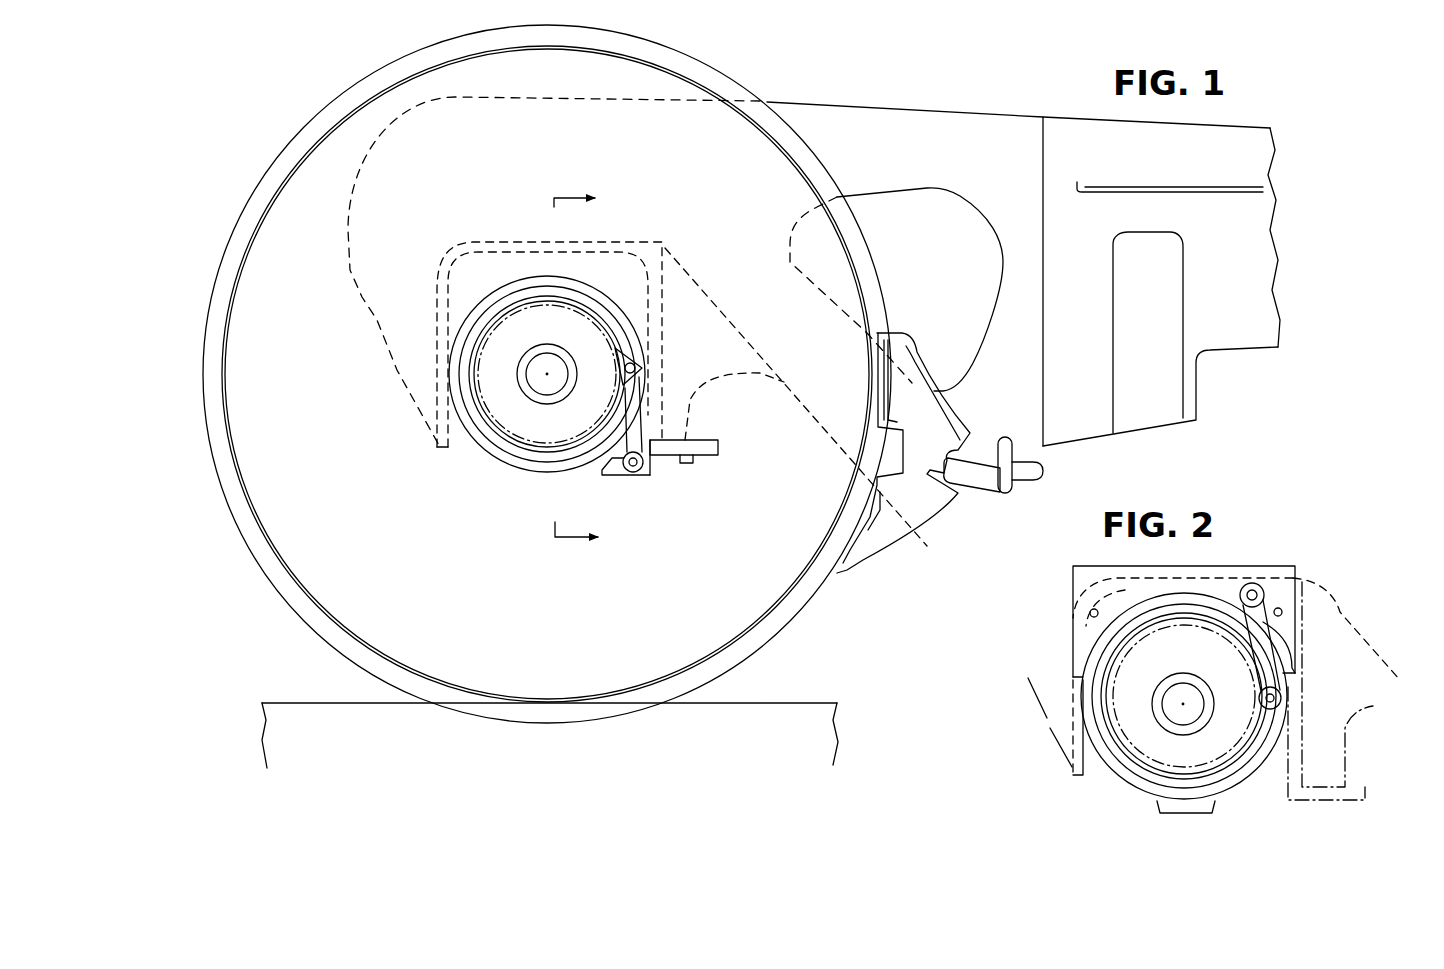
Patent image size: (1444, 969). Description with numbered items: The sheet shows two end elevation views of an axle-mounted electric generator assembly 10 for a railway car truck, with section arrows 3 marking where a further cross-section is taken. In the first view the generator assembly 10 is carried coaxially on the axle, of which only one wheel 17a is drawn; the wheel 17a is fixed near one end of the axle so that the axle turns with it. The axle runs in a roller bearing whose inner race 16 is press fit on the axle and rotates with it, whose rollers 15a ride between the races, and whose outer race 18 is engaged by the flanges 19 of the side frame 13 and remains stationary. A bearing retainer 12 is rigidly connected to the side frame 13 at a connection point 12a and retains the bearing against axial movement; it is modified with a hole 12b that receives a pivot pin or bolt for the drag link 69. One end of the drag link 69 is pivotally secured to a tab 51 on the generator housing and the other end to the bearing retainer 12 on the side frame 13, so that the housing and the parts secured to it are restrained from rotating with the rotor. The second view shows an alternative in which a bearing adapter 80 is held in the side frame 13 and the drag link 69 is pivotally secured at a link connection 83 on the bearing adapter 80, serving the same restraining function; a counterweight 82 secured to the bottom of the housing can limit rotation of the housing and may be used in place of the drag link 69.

In FIG. 1, the section line 3- 3 is at (590, 369).
In FIG. 1, the electric generator assembly 10 is at (556, 359).
In FIG. 2, the electric generator assembly 10 is at (1119, 781).
In FIG. 1, the bearing retainer 12 is at (702, 462).
In FIG. 1, the connection point 12a is at (684, 441).
In FIG. 1, the hole 12b is at (636, 470).
In FIG. 1, the side frame 13 is at (398, 368).
In FIG. 1, the rollers 15a is at (565, 455).
In FIG. 1, the inner race 16 is at (503, 431).
In FIG. 1, the wheel 17a is at (738, 633).
In FIG. 1, the outer race 18 is at (538, 464).
In FIG. 1, the flanges 19 is at (440, 447).
In FIG. 1, the tab 51 is at (637, 367).
In FIG. 1, the drag link 69 is at (640, 422).
In FIG. 2, the drag link 69 is at (1262, 656).
In FIG. 2, the bearing adapter 80 is at (1073, 616).
In FIG. 2, the counterweight 82 is at (1188, 814).
In FIG. 2, the link connection 83 is at (1254, 589).